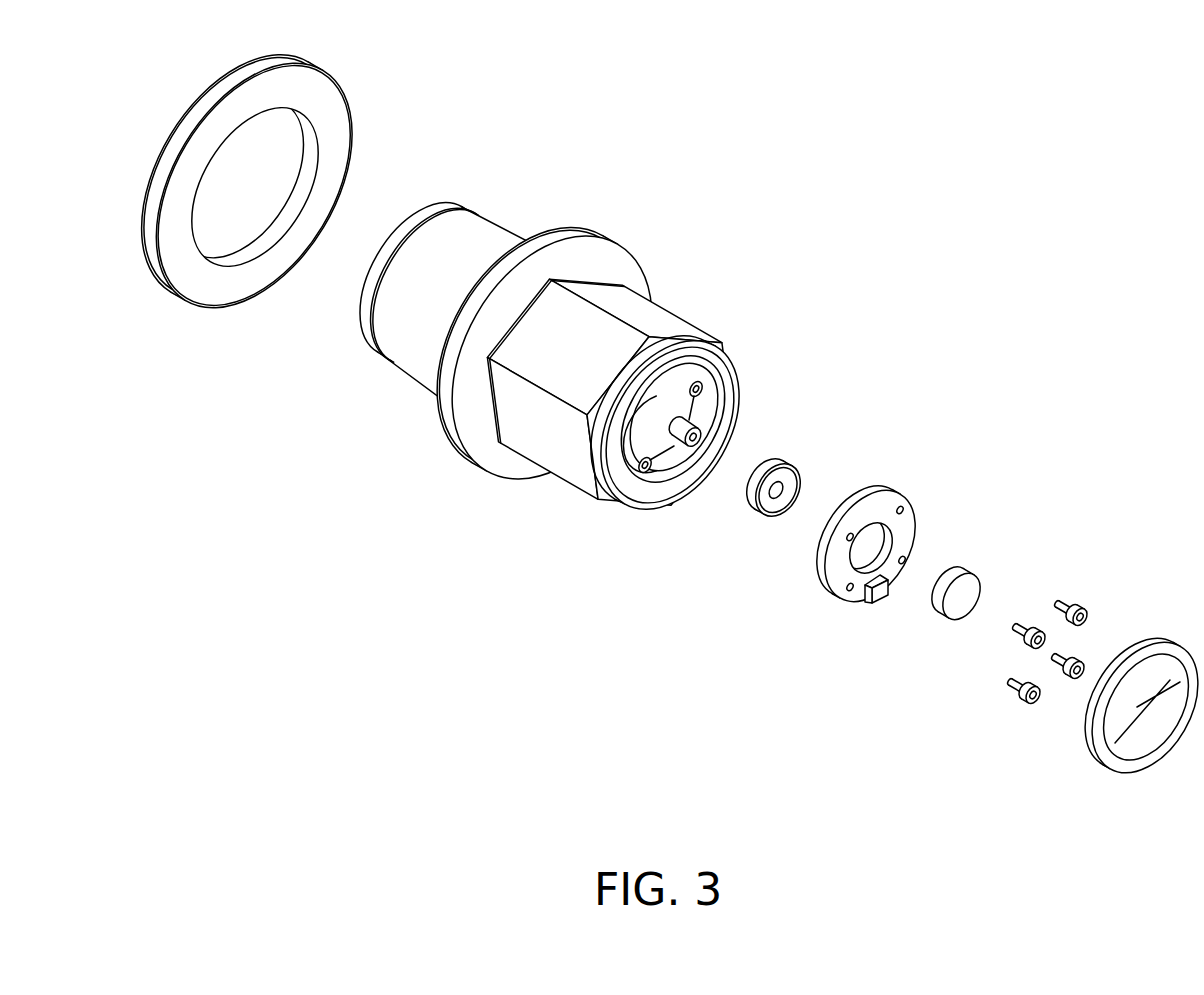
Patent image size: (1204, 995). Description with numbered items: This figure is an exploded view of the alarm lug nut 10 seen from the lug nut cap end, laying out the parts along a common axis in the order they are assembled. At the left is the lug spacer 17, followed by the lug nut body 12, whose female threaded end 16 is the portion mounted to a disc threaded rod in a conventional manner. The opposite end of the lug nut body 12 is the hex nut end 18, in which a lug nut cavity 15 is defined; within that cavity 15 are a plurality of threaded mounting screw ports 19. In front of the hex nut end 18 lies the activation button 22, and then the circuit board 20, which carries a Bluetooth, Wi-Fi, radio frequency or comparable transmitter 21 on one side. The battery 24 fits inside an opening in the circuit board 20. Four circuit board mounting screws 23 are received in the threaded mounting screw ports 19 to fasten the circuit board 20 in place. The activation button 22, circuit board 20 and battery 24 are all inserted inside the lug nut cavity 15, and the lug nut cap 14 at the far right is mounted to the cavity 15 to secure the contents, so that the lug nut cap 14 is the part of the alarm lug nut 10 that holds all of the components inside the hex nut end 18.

The alarm lug nut 10 is at (965, 152).
The lug nut body 12 is at (449, 454).
The lug nut cap 14 is at (1089, 757).
The lug nut cavity 15 is at (674, 472).
The threaded end 16 is at (404, 212).
The lug spacer 17 is at (307, 58).
The hex nut end 18 is at (670, 302).
The threaded mounting screw ports 19 is at (694, 415).
The circuit board 20 is at (905, 494).
The transmitter 21 is at (879, 604).
The activation button 22 is at (750, 485).
The circuit board mounting screws 23 is at (1072, 657).
The battery 24 is at (969, 574).